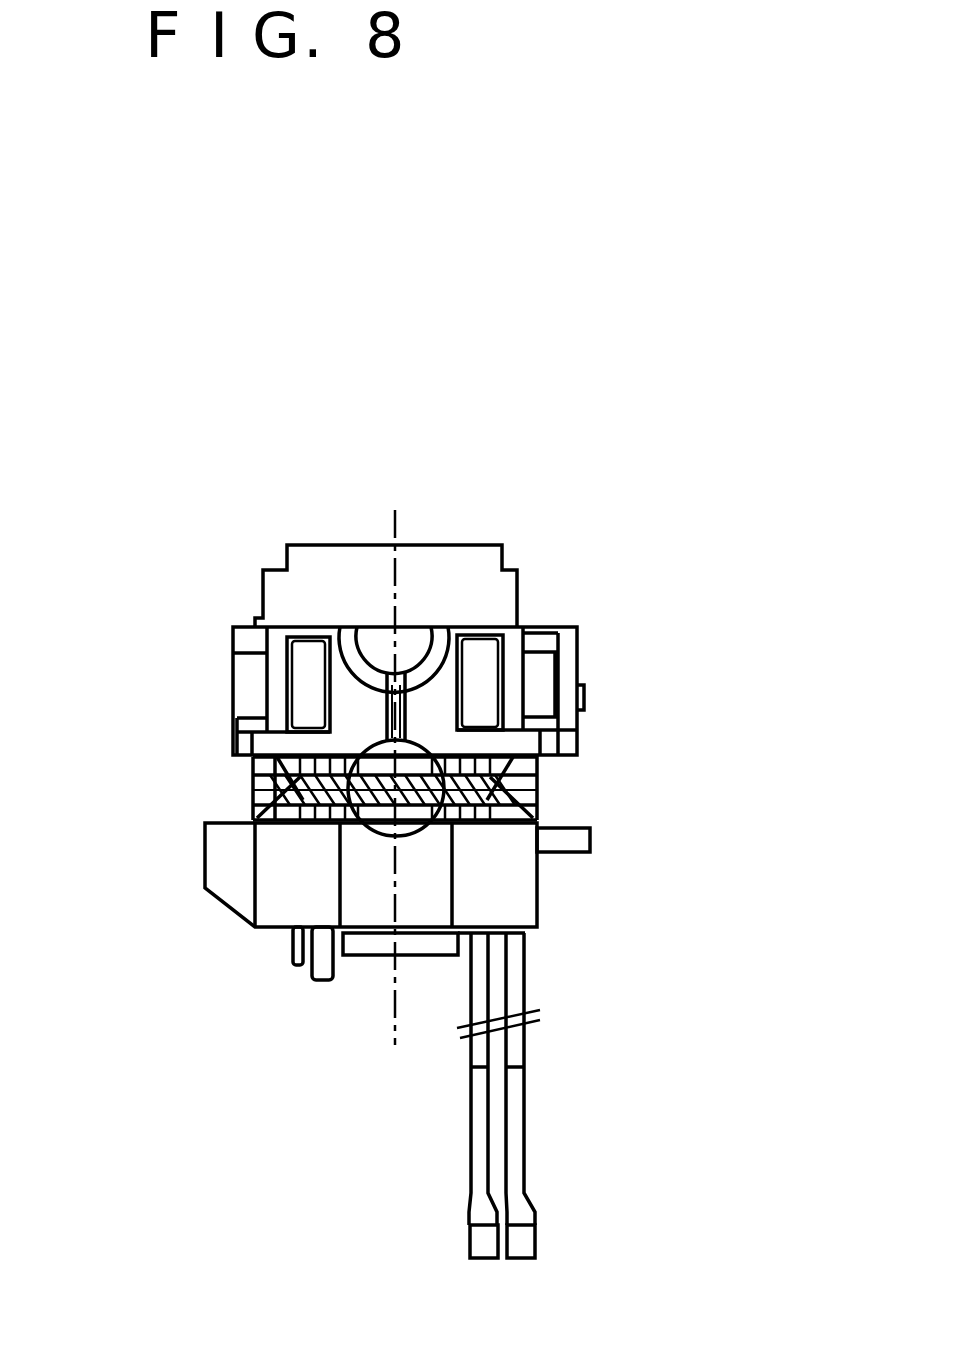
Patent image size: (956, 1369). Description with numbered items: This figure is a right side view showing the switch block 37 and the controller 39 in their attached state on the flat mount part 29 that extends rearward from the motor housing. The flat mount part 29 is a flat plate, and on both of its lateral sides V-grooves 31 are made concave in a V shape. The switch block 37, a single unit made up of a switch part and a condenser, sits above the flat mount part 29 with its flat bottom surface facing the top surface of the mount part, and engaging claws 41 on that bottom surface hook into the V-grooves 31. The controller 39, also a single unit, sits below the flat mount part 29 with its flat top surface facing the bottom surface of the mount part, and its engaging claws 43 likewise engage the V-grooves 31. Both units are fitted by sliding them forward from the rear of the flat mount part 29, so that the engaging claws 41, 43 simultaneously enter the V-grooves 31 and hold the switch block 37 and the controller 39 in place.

The flat mount part 29 is at (468, 775).
The V-grooves 31 is at (265, 797).
The switch block 37 is at (423, 565).
The controller 39 is at (398, 878).
The engaging claws 41 is at (263, 773).
The engaging claws 43 is at (265, 814).